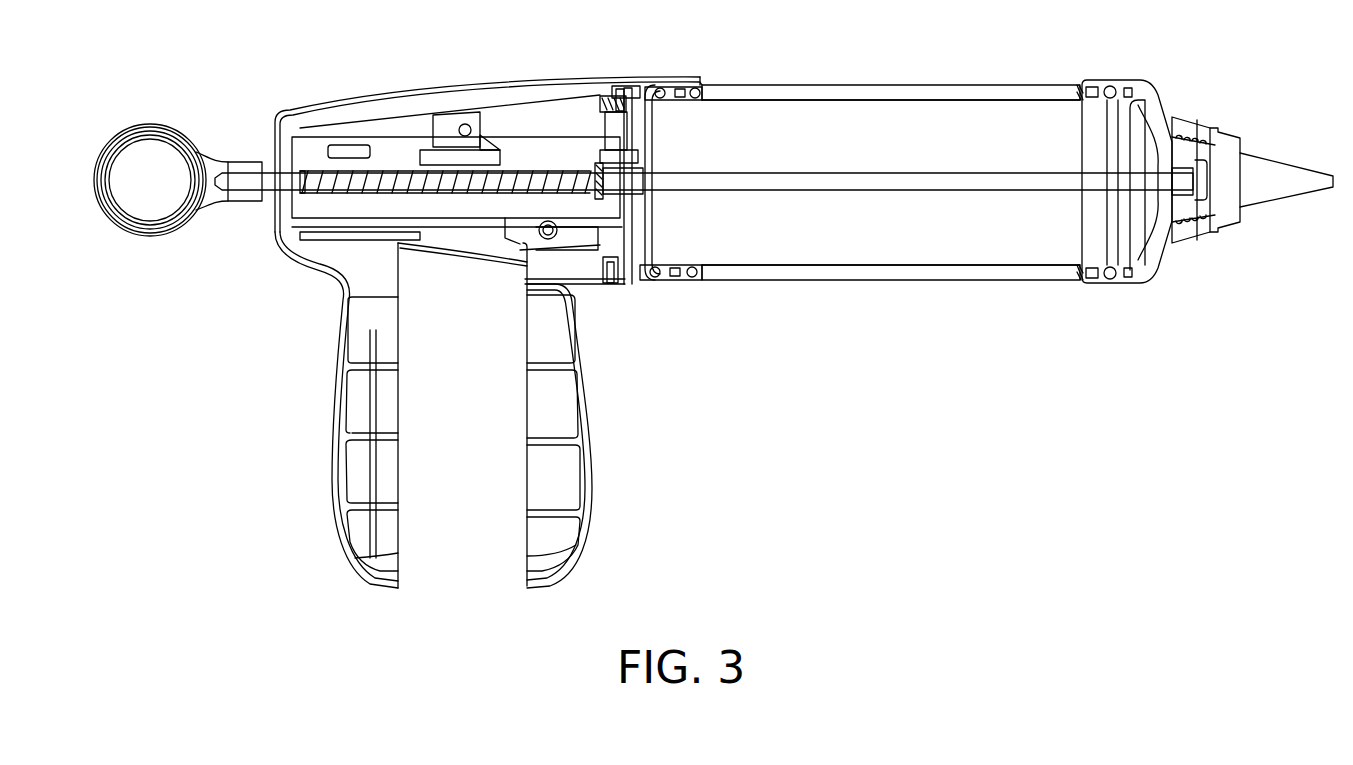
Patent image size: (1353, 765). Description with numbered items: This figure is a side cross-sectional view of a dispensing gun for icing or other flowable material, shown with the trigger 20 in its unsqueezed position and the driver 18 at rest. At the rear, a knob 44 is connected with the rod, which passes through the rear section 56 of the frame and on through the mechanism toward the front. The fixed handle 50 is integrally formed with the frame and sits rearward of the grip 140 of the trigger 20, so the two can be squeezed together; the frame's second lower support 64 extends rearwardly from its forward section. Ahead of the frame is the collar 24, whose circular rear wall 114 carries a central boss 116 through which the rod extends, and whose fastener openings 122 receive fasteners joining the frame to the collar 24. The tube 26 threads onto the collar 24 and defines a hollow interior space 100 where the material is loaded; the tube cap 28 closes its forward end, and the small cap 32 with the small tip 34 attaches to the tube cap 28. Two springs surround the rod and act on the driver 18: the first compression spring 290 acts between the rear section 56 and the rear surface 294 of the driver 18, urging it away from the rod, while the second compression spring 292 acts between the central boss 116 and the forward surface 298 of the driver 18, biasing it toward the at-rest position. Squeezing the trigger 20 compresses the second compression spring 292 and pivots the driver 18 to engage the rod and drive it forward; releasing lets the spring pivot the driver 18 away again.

The driver 18 is at (438, 125).
The trigger 20 is at (686, 461).
The collar 24 is at (690, 285).
The tube 26 is at (868, 282).
The tube cap 28 is at (1120, 284).
The small cap 32 is at (1196, 246).
The small tip 34 is at (1278, 190).
The knob 44 is at (152, 238).
The fixed handle 50 is at (343, 476).
The rear section 56 is at (282, 216).
The second lower support 64 is at (603, 98).
The hollow interior space 100 is at (838, 156).
The rear wall 114 is at (646, 284).
The central boss 116 is at (598, 170).
The fastener openings 122 is at (615, 90).
The grip 140 is at (592, 498).
The first compression spring 290 is at (337, 150).
The second compression spring 292 is at (508, 220).
The rear surface 294 is at (455, 210).
The forward surface 298 is at (490, 135).